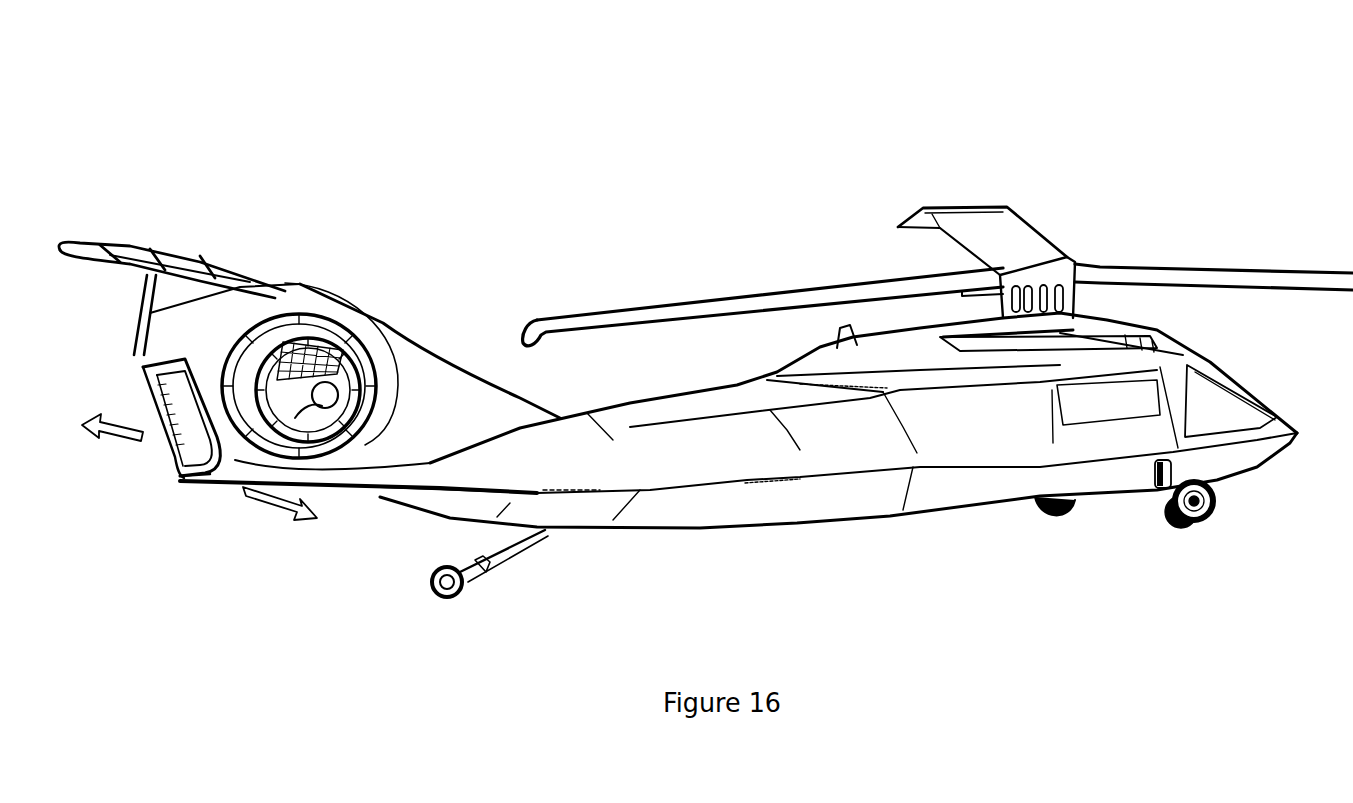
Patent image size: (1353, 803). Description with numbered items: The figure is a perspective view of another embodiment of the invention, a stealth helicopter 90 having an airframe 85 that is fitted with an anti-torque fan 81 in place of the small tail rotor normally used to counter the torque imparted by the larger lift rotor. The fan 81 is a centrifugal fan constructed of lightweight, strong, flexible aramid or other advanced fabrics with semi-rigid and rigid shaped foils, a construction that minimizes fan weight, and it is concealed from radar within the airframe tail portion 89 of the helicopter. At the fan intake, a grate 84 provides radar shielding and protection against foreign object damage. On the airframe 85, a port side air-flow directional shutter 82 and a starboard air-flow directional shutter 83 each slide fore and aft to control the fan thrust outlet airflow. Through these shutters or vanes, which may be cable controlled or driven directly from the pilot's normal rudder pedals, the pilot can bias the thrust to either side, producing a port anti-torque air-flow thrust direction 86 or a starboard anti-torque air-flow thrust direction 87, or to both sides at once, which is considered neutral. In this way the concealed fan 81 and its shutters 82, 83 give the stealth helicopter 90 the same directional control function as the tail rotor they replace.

The anti-torque fan 81 is at (360, 328).
The port side air-flow directional shutter 82 is at (169, 458).
The starboard air-flow directional shutter 83 is at (155, 378).
The fan intake radar shielding and foreign object damage protection grate 84 is at (312, 345).
The airframe 85 is at (748, 531).
The port anti-torque air-flow thrust direction 86 is at (97, 427).
The starboard anti-torque air-flow thrust direction 87 is at (294, 514).
The airframe tail portion 89 is at (136, 176).
The stealth helicopter 90 is at (1150, 118).